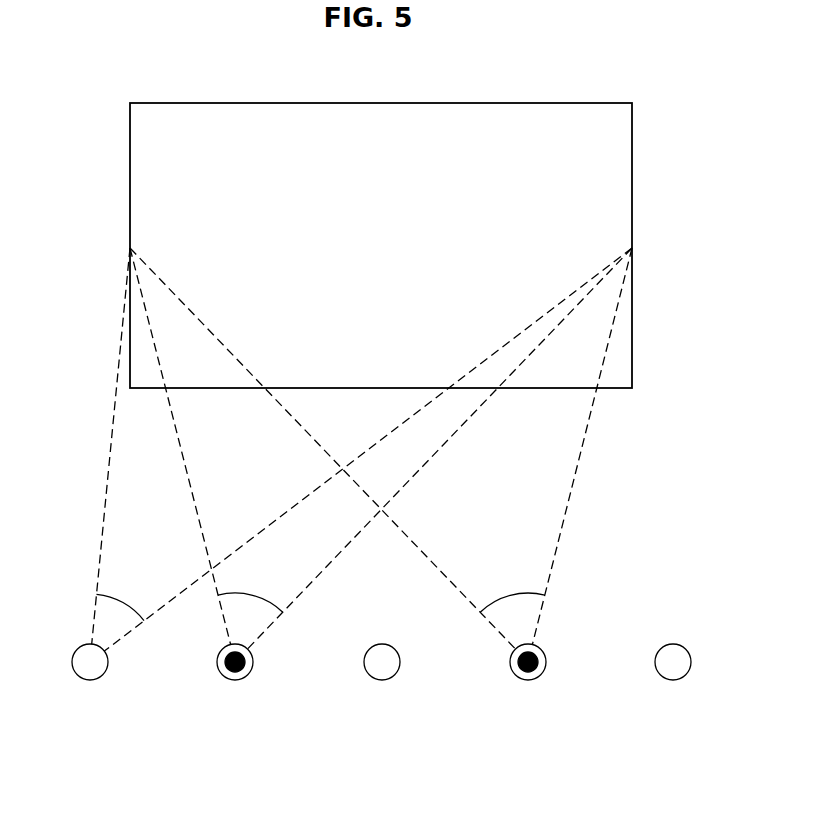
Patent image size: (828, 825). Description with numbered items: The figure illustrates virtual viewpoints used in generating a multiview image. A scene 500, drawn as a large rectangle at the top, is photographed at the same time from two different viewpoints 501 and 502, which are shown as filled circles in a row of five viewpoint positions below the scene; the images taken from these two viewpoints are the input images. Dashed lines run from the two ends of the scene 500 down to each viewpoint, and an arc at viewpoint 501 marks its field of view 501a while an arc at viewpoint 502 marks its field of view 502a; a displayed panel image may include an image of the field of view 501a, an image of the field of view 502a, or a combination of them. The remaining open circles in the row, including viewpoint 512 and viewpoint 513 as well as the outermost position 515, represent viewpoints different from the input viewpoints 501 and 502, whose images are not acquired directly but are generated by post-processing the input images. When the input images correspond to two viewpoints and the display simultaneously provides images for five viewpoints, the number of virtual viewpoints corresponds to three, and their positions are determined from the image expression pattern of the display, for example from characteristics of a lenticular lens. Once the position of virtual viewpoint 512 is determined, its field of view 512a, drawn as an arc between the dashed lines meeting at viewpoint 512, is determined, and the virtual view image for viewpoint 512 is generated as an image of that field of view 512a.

The scene 500 is at (383, 103).
The viewpoint 501 is at (235, 680).
The viewpoint 502 is at (528, 680).
The virtual viewpoint 512 is at (90, 680).
The virtual viewpoint 513 is at (382, 680).
The outer viewing position 515 is at (673, 680).
The field of view 512a is at (127, 595).
The field of view 501a is at (253, 594).
The field of view 502a is at (510, 594).